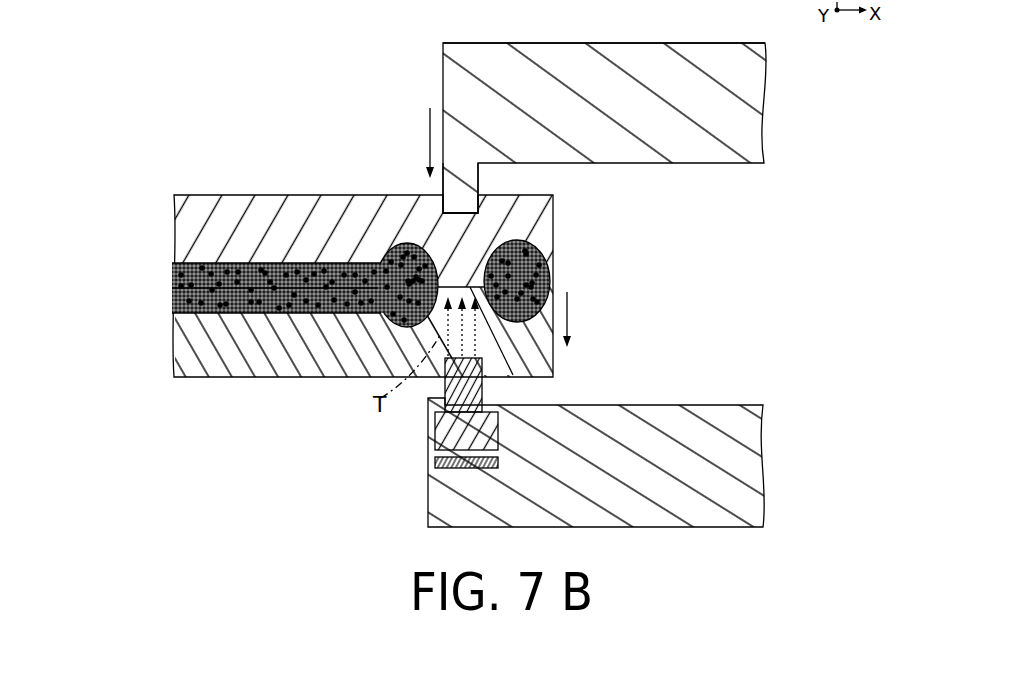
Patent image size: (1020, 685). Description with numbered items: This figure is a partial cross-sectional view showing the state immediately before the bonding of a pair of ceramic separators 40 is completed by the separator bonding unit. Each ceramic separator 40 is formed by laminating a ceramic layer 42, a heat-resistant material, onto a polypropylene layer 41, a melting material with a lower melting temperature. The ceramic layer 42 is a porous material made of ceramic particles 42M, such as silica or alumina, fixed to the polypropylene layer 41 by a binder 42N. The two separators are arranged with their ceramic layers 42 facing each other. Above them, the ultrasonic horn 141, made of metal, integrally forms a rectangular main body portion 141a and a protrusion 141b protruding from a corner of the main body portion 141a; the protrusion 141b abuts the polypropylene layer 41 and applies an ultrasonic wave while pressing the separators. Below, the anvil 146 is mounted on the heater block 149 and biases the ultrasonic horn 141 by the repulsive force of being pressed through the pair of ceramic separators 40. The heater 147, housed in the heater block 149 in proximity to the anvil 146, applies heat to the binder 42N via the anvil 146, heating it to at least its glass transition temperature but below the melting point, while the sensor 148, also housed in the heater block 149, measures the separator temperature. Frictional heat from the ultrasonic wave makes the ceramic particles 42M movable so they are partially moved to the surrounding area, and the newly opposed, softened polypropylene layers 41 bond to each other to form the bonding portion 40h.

The ceramic separator 40 is at (365, 248).
The polypropylene layer 41 is at (174, 236).
The ceramic layer 42 is at (395, 237).
The ceramic particles 42M is at (400, 252).
The binder 42N is at (387, 250).
The bonding portion 40h is at (407, 243).
The ultrasonic horn 141 is at (717, 42).
The main body portion 141a is at (587, 55).
The protrusion 141b is at (470, 193).
The anvil 146 is at (483, 382).
The heater 147 is at (440, 432).
The sensor 148 is at (437, 463).
The heater block 149 is at (438, 502).